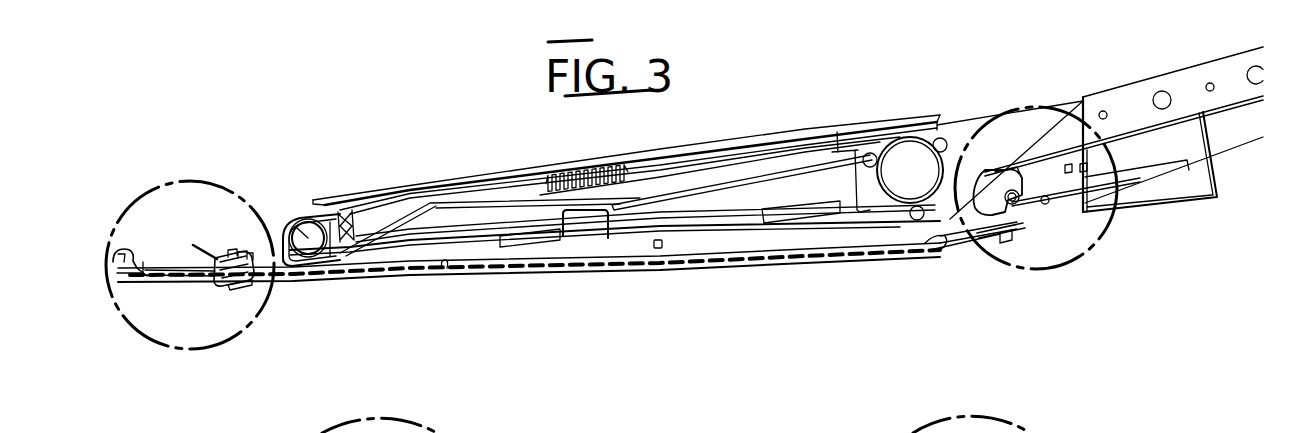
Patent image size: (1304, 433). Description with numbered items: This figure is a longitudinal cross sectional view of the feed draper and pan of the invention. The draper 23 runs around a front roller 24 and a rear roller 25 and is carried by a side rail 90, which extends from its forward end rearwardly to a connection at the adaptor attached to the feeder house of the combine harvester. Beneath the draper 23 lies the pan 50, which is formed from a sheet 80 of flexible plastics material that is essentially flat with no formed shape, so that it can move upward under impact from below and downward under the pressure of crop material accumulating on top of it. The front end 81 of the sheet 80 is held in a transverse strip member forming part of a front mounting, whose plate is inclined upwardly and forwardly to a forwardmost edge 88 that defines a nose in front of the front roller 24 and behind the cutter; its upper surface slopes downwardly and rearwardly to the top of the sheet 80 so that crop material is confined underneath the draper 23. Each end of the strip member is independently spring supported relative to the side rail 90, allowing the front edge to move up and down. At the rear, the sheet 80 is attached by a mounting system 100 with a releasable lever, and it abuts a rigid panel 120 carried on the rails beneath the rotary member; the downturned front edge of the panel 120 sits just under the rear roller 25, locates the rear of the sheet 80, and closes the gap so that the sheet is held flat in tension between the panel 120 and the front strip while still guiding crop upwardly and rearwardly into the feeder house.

The draper 23 is at (427, 184).
The front roller 24 is at (303, 236).
The rear roller 25 is at (907, 165).
The pan 50 is at (800, 270).
The sheet 80 is at (490, 284).
The front end of the sheet 81 is at (232, 287).
The forwardmost edge 88 is at (195, 245).
The side rail 90 is at (1115, 98).
The mounting system 100 is at (1070, 277).
The rigid panel 120 is at (933, 250).